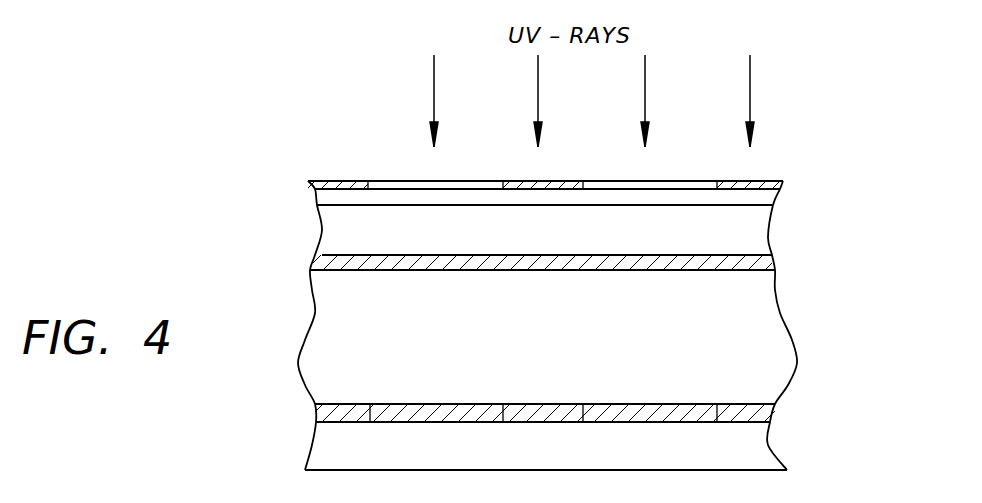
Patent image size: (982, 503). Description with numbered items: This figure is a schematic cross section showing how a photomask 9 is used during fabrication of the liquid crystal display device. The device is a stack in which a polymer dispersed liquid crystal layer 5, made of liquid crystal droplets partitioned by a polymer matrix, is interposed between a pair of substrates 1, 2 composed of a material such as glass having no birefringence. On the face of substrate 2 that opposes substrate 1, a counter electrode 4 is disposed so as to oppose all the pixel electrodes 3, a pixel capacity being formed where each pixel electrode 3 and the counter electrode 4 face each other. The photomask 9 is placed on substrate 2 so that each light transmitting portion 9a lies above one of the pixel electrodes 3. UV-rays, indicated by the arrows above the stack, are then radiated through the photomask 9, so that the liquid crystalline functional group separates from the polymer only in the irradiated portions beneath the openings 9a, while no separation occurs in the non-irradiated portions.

The substrate 1 is at (767, 454).
The substrate 2 is at (750, 237).
The pixel electrodes 3 is at (717, 404).
The counter electrode 4 is at (767, 263).
The polymer dispersed liquid crystal layer 5 is at (558, 348).
The photomask 9 is at (767, 198).
The light transmitting portion 9a is at (703, 179).